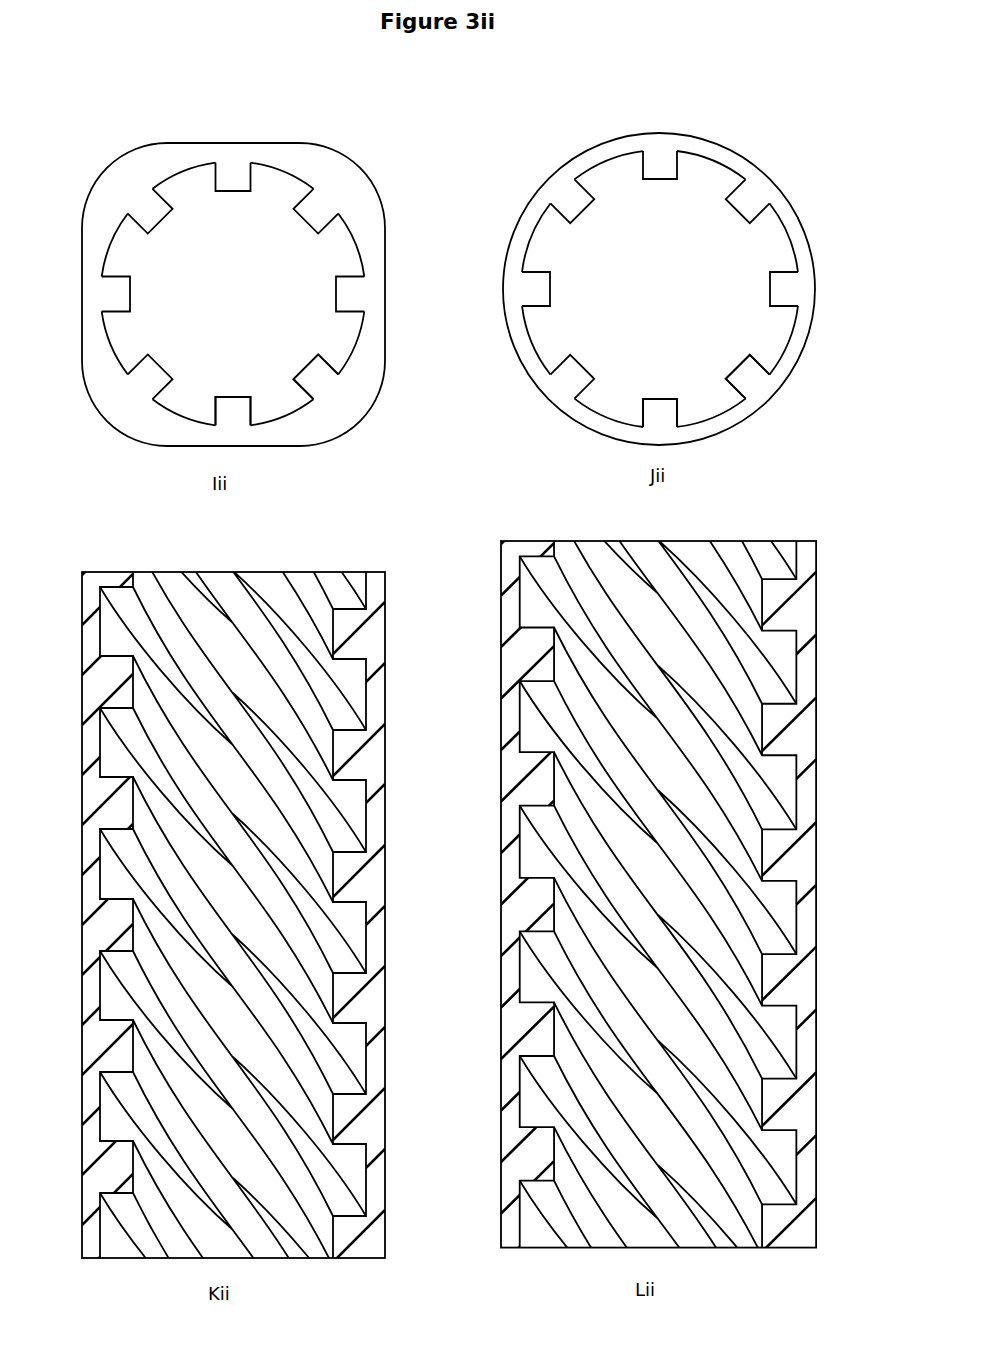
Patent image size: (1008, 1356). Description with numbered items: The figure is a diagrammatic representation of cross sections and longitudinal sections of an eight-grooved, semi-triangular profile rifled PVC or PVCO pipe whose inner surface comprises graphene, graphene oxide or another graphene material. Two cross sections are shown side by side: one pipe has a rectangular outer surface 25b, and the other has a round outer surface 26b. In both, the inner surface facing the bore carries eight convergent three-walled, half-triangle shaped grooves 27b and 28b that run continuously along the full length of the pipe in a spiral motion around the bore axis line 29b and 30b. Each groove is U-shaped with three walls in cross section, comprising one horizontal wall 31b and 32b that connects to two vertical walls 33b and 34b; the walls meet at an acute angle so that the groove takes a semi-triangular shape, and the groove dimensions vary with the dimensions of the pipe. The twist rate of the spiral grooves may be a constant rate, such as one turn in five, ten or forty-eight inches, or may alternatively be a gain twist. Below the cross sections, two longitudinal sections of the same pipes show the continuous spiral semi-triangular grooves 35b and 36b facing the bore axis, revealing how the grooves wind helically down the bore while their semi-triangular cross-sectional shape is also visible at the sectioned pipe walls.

The rectangular cross-section pipe outer surface 25b is at (98, 173).
The round cross-section pipe outer surface 26b is at (572, 158).
The grooves 27b is at (133, 362).
The grooves 28b is at (540, 340).
The bore axis line 29b is at (269, 320).
The bore axis line 30b is at (699, 305).
The horizontal wall 31b is at (287, 420).
The horizontal wall 32b is at (720, 417).
The vertical walls 33b is at (247, 427).
The vertical walls 34b is at (678, 422).
The continuous spiral semi-triangular grooves 35b is at (350, 1169).
The continuous spiral semi-triangular grooves 36b is at (785, 1155).